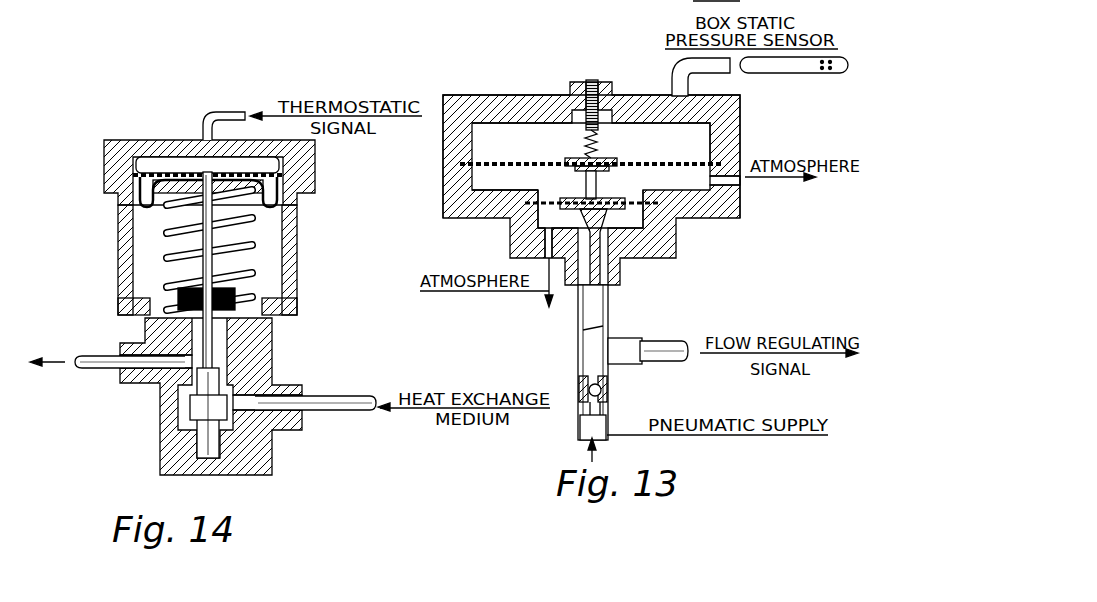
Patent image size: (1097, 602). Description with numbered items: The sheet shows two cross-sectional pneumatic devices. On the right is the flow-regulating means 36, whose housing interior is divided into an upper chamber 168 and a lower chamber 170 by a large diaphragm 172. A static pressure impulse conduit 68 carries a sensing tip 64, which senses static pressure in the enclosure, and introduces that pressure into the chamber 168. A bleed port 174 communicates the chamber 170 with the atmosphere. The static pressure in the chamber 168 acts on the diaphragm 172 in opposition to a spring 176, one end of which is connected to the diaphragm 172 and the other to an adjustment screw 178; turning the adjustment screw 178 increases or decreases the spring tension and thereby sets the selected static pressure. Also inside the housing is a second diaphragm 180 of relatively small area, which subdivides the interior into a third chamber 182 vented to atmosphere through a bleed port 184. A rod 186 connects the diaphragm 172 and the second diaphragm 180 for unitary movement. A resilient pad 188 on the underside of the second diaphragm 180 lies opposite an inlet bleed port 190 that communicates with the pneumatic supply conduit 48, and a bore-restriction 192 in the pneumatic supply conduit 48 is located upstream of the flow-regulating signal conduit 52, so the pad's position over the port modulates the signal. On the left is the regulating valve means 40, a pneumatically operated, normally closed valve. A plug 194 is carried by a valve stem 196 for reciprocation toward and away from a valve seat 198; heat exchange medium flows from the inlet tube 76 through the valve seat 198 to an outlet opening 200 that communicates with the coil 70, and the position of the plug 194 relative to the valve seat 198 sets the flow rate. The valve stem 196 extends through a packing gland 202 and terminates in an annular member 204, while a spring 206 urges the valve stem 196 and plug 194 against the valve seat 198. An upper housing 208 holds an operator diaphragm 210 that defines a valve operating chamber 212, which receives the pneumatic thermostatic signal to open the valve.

In FIG. 14, the regulating valve means 40 is at (150, 106).
In FIG. 14, the valve operating chamber 212 is at (155, 162).
In FIG. 14, the operator diaphragm 210 is at (140, 178).
In FIG. 14, the upper housing 208 is at (310, 190).
In FIG. 14, the annular member 204 is at (272, 237).
In FIG. 14, the spring 206 is at (254, 272).
In FIG. 14, the packing gland 202 is at (178, 293).
In FIG. 14, the coil 70 is at (102, 358).
In FIG. 14, the valve stem 196 is at (240, 348).
In FIG. 14, the valve seat 198 is at (250, 386).
In FIG. 14, the outlet opening 200 is at (160, 372).
In FIG. 14, the plug 194 is at (190, 402).
In FIG. 14, the inlet tube 76 is at (343, 413).
In FIG. 13, the flow-regulating means 36 is at (528, 81).
In FIG. 13, the adjustment screw 178 is at (590, 80).
In FIG. 13, the static pressure impulse conduit 68 is at (672, 68).
In FIG. 13, the sensing tip 64 is at (805, 70).
In FIG. 13, the chamber 168 is at (507, 149).
In FIG. 13, the spring 176 is at (586, 136).
In FIG. 13, the diaphragm 172 is at (700, 162).
In FIG. 13, the chamber 170 is at (512, 189).
In FIG. 13, the second diaphragm 180 is at (583, 192).
In FIG. 13, the rod 186 is at (600, 192).
In FIG. 13, the bleed port 174 is at (738, 182).
In FIG. 13, the third chamber 182 is at (548, 213).
In FIG. 13, the bleed port 184 is at (545, 240).
In FIG. 13, the resilient pad 188 is at (600, 205).
In FIG. 13, the inlet bleed port 190 is at (622, 270).
In FIG. 13, the flow-regulating signal conduit 52 is at (657, 340).
In FIG. 13, the bore-restriction 192 is at (602, 398).
In FIG. 13, the pneumatic supply conduit 48 is at (606, 413).